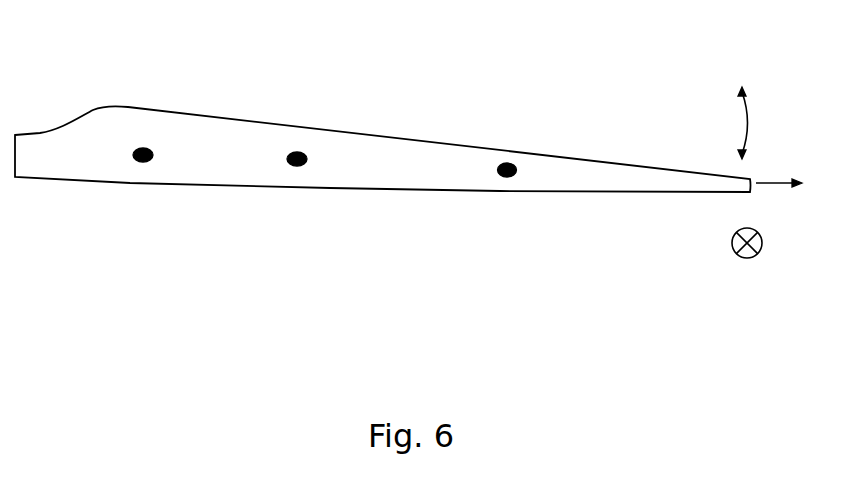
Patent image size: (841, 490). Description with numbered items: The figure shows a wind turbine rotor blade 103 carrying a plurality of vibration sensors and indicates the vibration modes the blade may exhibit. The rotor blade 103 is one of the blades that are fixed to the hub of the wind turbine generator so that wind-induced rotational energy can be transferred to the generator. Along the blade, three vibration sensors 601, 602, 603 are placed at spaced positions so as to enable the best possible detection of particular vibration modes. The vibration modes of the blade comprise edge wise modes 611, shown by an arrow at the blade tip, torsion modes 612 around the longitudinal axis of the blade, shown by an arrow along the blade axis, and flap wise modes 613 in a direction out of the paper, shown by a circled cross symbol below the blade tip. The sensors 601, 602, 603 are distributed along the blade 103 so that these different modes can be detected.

The rotor blade 103 is at (93, 107).
The vibration sensor 601 is at (150, 163).
The vibration sensor 602 is at (298, 167).
The vibration sensor 603 is at (513, 178).
The edge wise modes 611 is at (735, 117).
The torsion modes 612 is at (774, 176).
The flap wise modes 613 is at (741, 262).